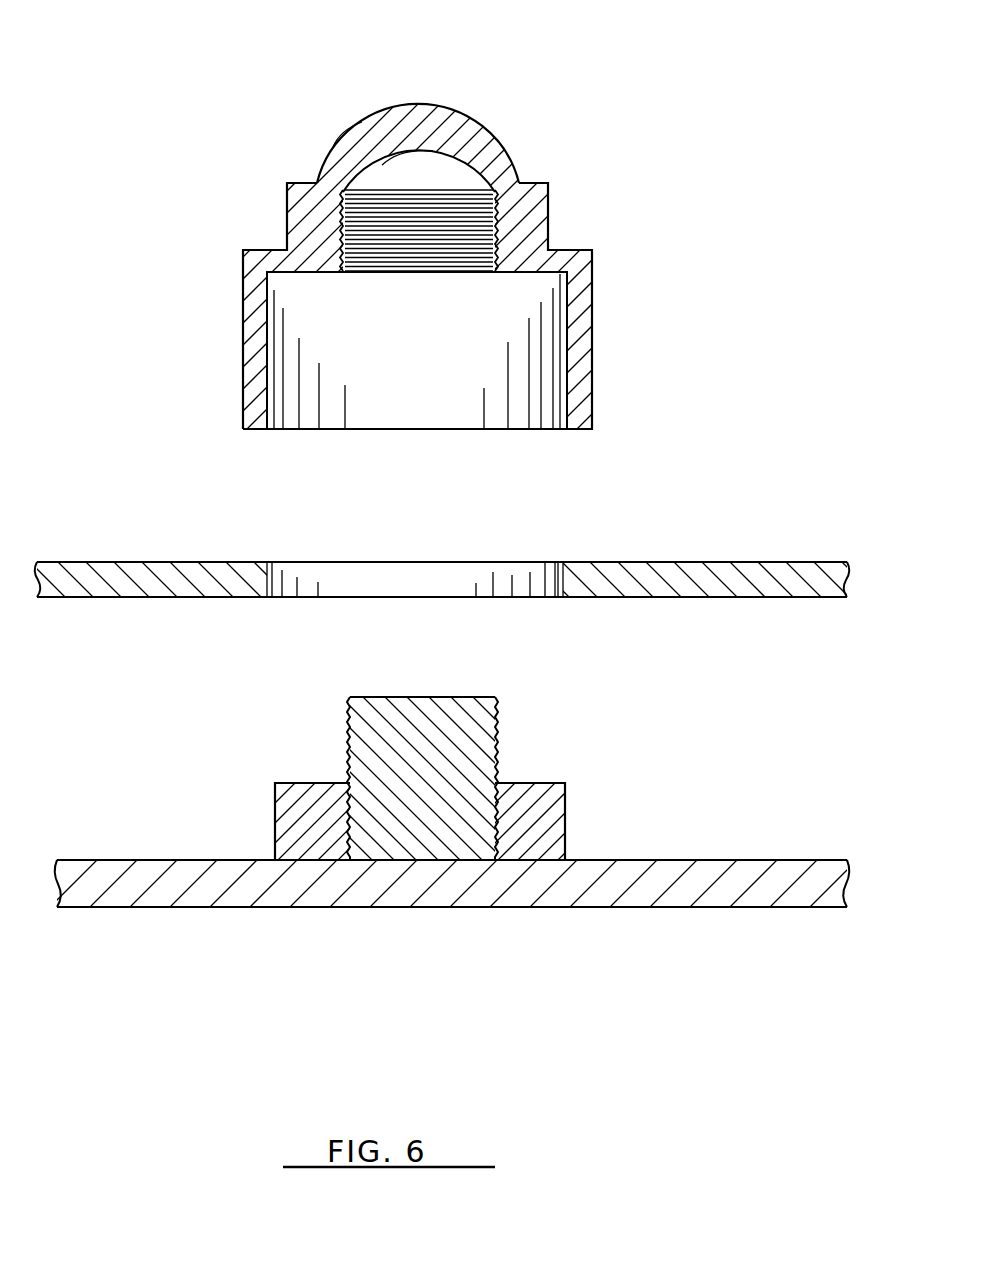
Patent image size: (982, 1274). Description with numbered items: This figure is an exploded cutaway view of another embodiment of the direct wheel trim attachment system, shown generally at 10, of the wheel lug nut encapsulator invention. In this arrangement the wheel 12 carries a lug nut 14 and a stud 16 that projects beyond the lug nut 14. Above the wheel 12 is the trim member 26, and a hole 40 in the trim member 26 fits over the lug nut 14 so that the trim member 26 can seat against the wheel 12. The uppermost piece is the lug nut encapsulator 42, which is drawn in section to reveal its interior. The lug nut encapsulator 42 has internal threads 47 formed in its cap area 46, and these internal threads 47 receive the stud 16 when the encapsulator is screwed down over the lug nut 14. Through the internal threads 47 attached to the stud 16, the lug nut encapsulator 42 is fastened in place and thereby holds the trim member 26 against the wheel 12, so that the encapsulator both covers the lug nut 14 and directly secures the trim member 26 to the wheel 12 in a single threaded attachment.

The fastener assembly 10 is at (212, 100).
The wheel 12 is at (728, 860).
The lug nut 14 is at (565, 815).
The stud 16 is at (495, 722).
The trim member 26 is at (439, 550).
The hole 40 is at (563, 580).
The lug nut encapsulator 42 is at (451, 291).
The cap area 46 is at (404, 272).
The internal threads 47 is at (523, 183).